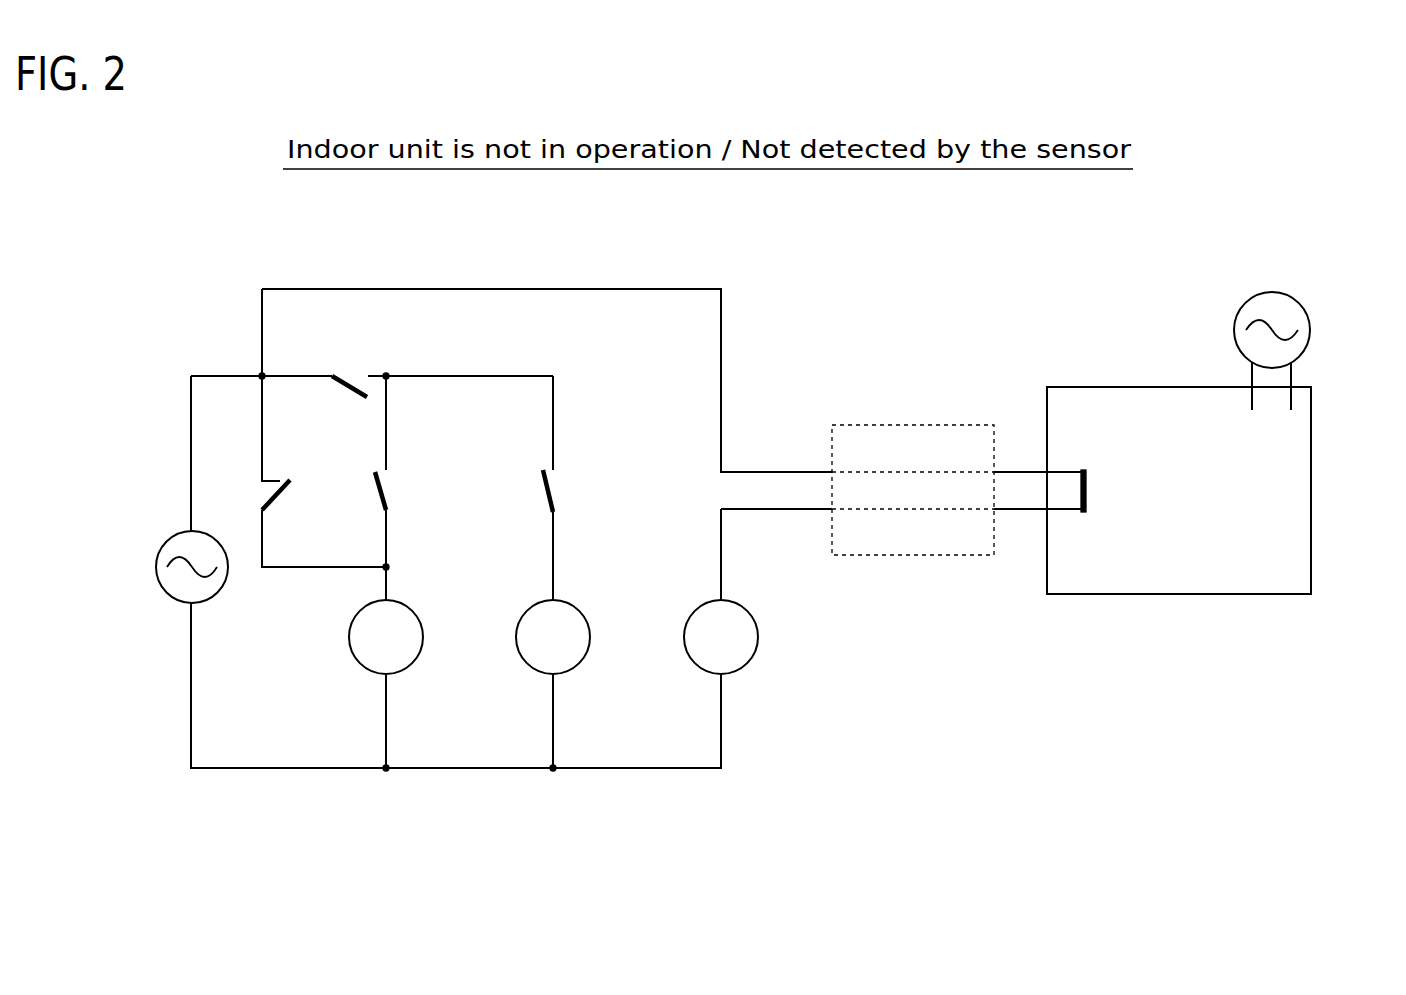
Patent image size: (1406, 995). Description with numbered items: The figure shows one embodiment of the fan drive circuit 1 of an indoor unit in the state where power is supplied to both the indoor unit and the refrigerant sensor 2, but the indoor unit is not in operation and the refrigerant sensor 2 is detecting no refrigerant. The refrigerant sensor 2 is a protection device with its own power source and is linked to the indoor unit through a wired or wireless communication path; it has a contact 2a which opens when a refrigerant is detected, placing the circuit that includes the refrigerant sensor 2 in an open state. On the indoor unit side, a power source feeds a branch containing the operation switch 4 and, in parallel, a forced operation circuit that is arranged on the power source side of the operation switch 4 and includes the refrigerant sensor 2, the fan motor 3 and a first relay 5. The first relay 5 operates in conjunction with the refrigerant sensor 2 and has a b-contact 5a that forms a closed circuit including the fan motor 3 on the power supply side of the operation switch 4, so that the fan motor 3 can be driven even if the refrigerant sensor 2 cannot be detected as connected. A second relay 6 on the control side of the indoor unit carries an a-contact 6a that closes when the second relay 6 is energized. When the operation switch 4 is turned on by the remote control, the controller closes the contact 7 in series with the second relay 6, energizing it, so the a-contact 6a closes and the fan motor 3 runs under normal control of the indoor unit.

The fan drive circuit 1 is at (412, 278).
The refrigerant sensor 2 is at (1122, 357).
The contact 2a is at (1102, 490).
The fan motor 3 is at (420, 607).
The operation switch 4 is at (340, 395).
The first relay 5 is at (753, 608).
The b-contact 5a is at (285, 502).
The second relay 6 is at (588, 607).
The a-contact 6a is at (395, 492).
The contact 7 is at (563, 493).